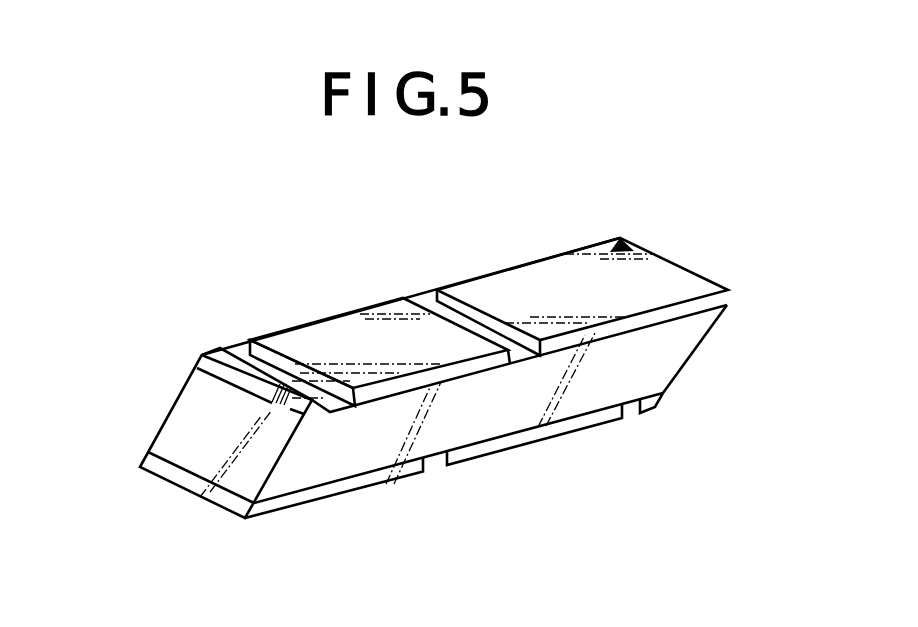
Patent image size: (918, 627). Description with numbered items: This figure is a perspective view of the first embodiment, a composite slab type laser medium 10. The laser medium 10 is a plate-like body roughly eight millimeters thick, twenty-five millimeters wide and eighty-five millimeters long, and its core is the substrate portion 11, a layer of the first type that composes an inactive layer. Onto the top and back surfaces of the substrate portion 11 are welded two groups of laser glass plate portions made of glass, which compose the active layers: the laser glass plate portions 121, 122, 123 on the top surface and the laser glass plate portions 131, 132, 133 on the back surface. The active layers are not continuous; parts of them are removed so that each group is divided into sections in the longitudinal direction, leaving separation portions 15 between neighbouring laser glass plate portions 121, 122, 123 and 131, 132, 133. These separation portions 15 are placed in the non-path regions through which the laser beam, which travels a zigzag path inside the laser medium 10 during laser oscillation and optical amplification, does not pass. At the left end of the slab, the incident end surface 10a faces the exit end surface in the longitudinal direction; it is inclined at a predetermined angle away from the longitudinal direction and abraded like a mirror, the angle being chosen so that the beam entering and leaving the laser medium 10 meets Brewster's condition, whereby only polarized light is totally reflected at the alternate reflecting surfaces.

The laser medium 10 is at (432, 348).
The incident end surface 10a is at (191, 433).
The substrate portion 11 is at (495, 418).
The separation portions 15 is at (451, 377).
The laser glass plate portion 121 is at (413, 387).
The laser glass plate portion 122 is at (703, 302).
The laser glass plate portion 123 is at (333, 373).
The laser glass plate portion 131 is at (550, 428).
The laser glass plate portion 132 is at (360, 478).
The laser glass plate portion 133 is at (650, 402).